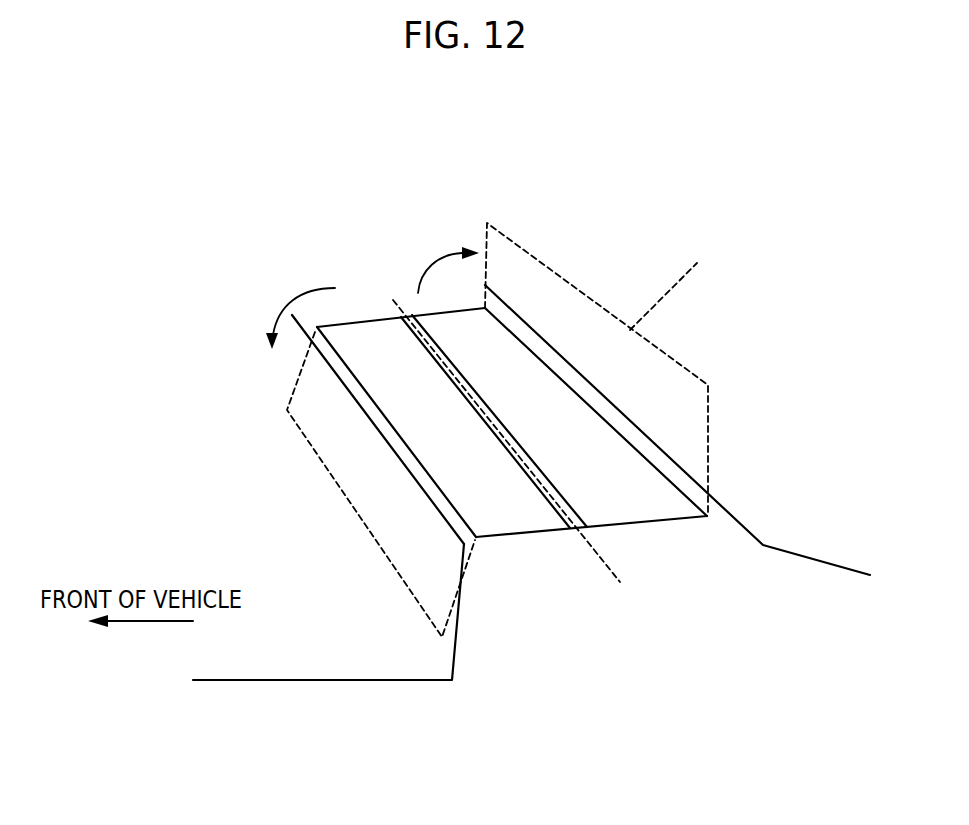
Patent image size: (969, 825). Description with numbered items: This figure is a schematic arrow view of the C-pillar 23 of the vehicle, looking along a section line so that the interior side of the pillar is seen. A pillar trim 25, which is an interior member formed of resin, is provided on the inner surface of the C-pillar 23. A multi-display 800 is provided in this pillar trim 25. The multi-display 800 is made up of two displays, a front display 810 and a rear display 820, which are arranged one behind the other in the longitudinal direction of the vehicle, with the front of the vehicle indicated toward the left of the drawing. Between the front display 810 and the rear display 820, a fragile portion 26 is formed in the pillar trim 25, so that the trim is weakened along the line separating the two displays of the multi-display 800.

The multi-display 800 is at (360, 265).
The front display 810 is at (400, 398).
The rear display 820 is at (503, 353).
The fragile portion 26 is at (590, 540).
The pillar trim 25 is at (687, 540).
The C-pillar 23 is at (632, 212).